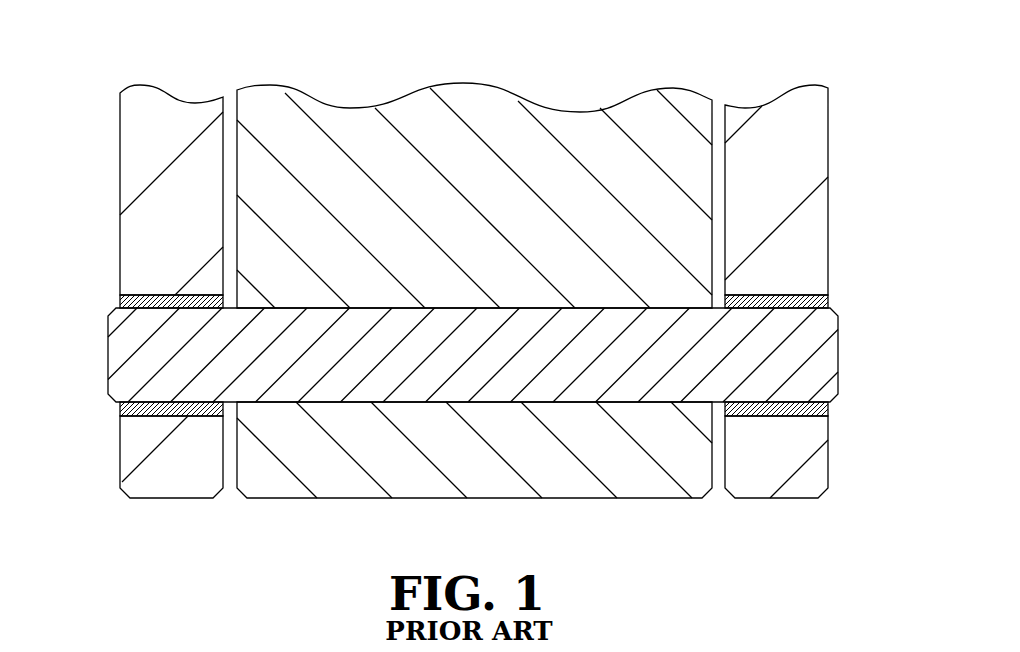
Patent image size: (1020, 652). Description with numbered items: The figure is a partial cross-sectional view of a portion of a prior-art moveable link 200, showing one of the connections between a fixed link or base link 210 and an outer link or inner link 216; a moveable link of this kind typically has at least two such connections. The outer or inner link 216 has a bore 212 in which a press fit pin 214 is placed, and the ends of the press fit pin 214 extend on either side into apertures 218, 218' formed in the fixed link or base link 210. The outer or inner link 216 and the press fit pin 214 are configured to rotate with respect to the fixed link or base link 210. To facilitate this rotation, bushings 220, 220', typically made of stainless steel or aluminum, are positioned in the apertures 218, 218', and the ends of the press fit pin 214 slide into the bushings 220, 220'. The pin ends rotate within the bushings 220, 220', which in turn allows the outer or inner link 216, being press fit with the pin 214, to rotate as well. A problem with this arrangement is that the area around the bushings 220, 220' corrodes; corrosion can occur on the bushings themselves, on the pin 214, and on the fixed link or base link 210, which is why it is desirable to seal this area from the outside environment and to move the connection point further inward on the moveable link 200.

The moveable link 200 is at (867, 80).
The fixed link or base link 210 is at (828, 192).
The outer link or inner link 216 is at (652, 133).
The bore 212 is at (640, 405).
The press fit pin 214 is at (370, 383).
The aperture 218 is at (821, 450).
The aperture 218' is at (113, 433).
The bushing 220 is at (818, 270).
The bushing 220' is at (127, 268).